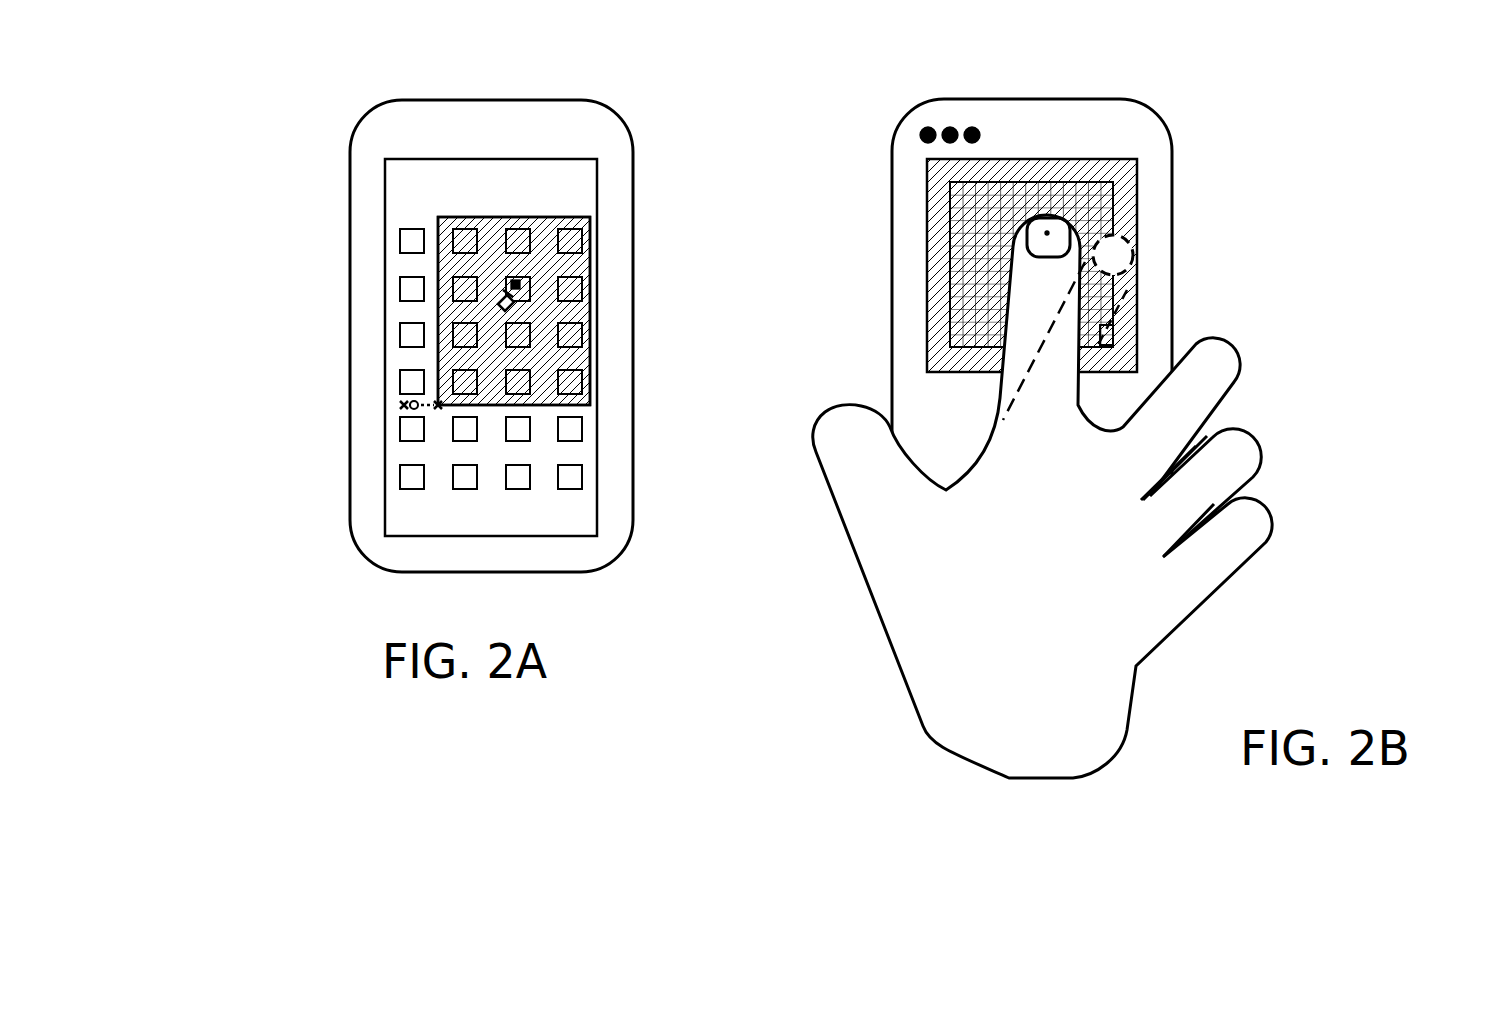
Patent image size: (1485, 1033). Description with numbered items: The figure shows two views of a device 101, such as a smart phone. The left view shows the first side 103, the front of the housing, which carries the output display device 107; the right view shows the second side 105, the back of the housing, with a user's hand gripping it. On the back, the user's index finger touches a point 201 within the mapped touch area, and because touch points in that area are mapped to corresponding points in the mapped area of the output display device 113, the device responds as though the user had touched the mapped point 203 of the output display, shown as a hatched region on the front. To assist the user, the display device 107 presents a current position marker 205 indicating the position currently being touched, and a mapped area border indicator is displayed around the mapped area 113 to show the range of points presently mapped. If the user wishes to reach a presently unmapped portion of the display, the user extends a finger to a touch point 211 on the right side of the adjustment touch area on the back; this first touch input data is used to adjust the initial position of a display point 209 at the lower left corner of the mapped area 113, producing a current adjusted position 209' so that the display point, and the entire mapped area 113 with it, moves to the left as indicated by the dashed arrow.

In FIG. 2A, the device 101 is at (527, 99).
In FIG. 2B, the device 101 is at (1085, 99).
In FIG. 2A, the first side 103 is at (388, 102).
In FIG. 2B, the second side 105 is at (933, 112).
In FIG. 2A, the output display device 107 is at (383, 245).
In FIG. 2A, the mapped area of the output display device 113 is at (535, 217).
In FIG. 2A, the touched point of mapped touch area 201 is at (488, 265).
In FIG. 2B, the touched point of mapped touch area 201 is at (1064, 214).
In FIG. 2A, the mapped point of output display 203 is at (521, 276).
In FIG. 2A, the current position marker 205 is at (510, 304).
In FIG. 2A, the display point at current position of mapped area 209 is at (290, 471).
In FIG. 2A, the adjusted position of mapped area 209' is at (253, 404).
In FIG. 2B, the touched point of adjustment touch area 211 is at (1130, 236).